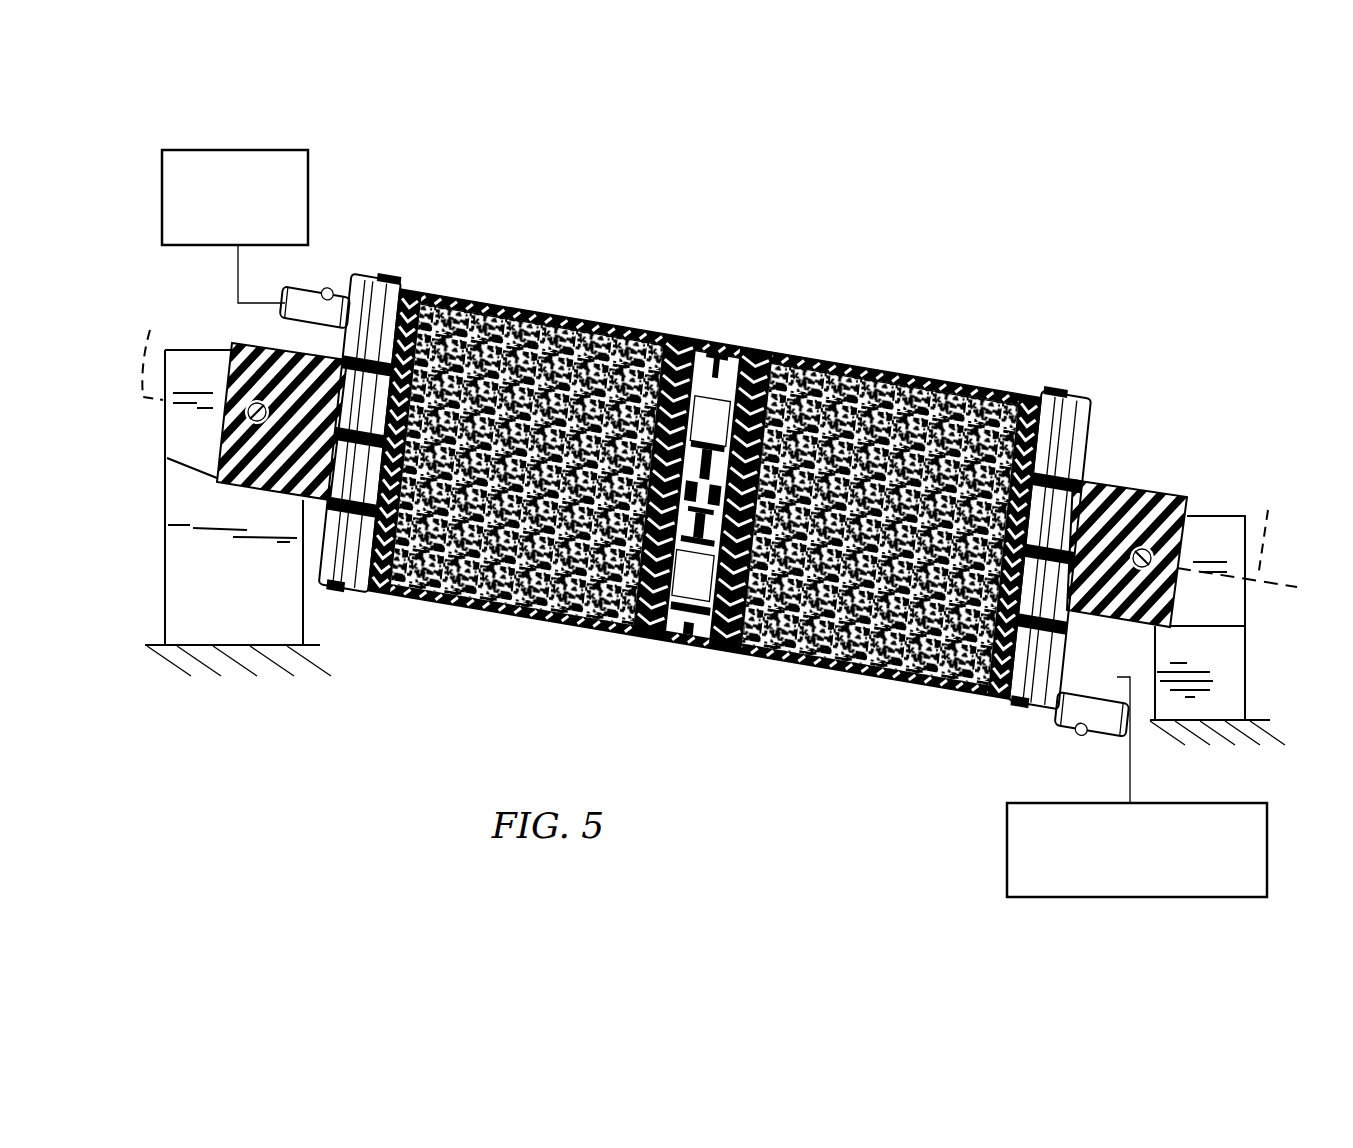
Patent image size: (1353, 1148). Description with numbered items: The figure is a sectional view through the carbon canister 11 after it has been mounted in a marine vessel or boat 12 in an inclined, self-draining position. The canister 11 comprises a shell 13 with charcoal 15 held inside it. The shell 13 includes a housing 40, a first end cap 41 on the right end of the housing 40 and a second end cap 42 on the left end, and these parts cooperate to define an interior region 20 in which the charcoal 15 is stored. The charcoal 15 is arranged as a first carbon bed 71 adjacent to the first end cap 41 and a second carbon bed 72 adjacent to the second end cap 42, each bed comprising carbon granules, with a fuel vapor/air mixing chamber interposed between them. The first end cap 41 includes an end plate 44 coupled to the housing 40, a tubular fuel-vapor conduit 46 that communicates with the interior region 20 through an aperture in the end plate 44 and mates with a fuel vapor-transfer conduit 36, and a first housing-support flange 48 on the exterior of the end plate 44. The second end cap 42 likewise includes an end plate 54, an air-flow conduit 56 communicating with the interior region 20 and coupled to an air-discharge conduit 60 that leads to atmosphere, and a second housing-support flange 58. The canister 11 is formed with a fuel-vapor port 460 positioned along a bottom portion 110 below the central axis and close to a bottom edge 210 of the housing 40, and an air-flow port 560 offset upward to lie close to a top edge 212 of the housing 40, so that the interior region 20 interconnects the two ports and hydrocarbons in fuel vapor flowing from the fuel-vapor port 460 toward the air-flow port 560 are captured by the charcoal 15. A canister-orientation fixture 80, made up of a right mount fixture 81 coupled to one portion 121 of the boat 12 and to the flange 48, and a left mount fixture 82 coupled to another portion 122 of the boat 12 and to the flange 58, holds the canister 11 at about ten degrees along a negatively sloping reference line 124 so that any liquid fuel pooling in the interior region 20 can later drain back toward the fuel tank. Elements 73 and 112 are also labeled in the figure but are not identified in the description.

The carbon canister 11 is at (709, 494).
The boat 12 is at (207, 640).
The shell 13 is at (970, 375).
The charcoal 15 is at (583, 633).
The interior region 20 is at (357, 540).
The fuel vapor-transfer conduit 36 is at (1007, 858).
The housing 40 is at (600, 313).
The first end cap 41 is at (1120, 550).
The second end cap 42 is at (282, 422).
The end plate 44 is at (1077, 410).
The fuel-vapor conduit 46 is at (1100, 687).
The first housing-support flange 48 is at (1128, 470).
The end plate 54 is at (370, 287).
The air-flow conduit 56 is at (310, 287).
The second housing-support flange 58 is at (258, 337).
The air-discharge conduit 60 is at (312, 193).
The first carbon bed 71 is at (805, 670).
The second carbon bed 72 is at (470, 613).
The partition 73 is at (690, 657).
The canister-orientation fixture 80 is at (137, 490).
The right mount fixture 81 is at (1230, 618).
The left mount fixture 82 is at (190, 557).
The bottom portion 110 is at (880, 683).
The inner wall layer 112 is at (537, 297).
The portion of boat 121 is at (1243, 738).
The portion of boat 122 is at (247, 653).
The negatively sloping reference line 124 is at (708, 440).
The bottom edge 210 is at (960, 697).
The top edge 212 is at (457, 292).
The fuel-vapor port 460 is at (1070, 682).
The air-flow port 560 is at (337, 293).